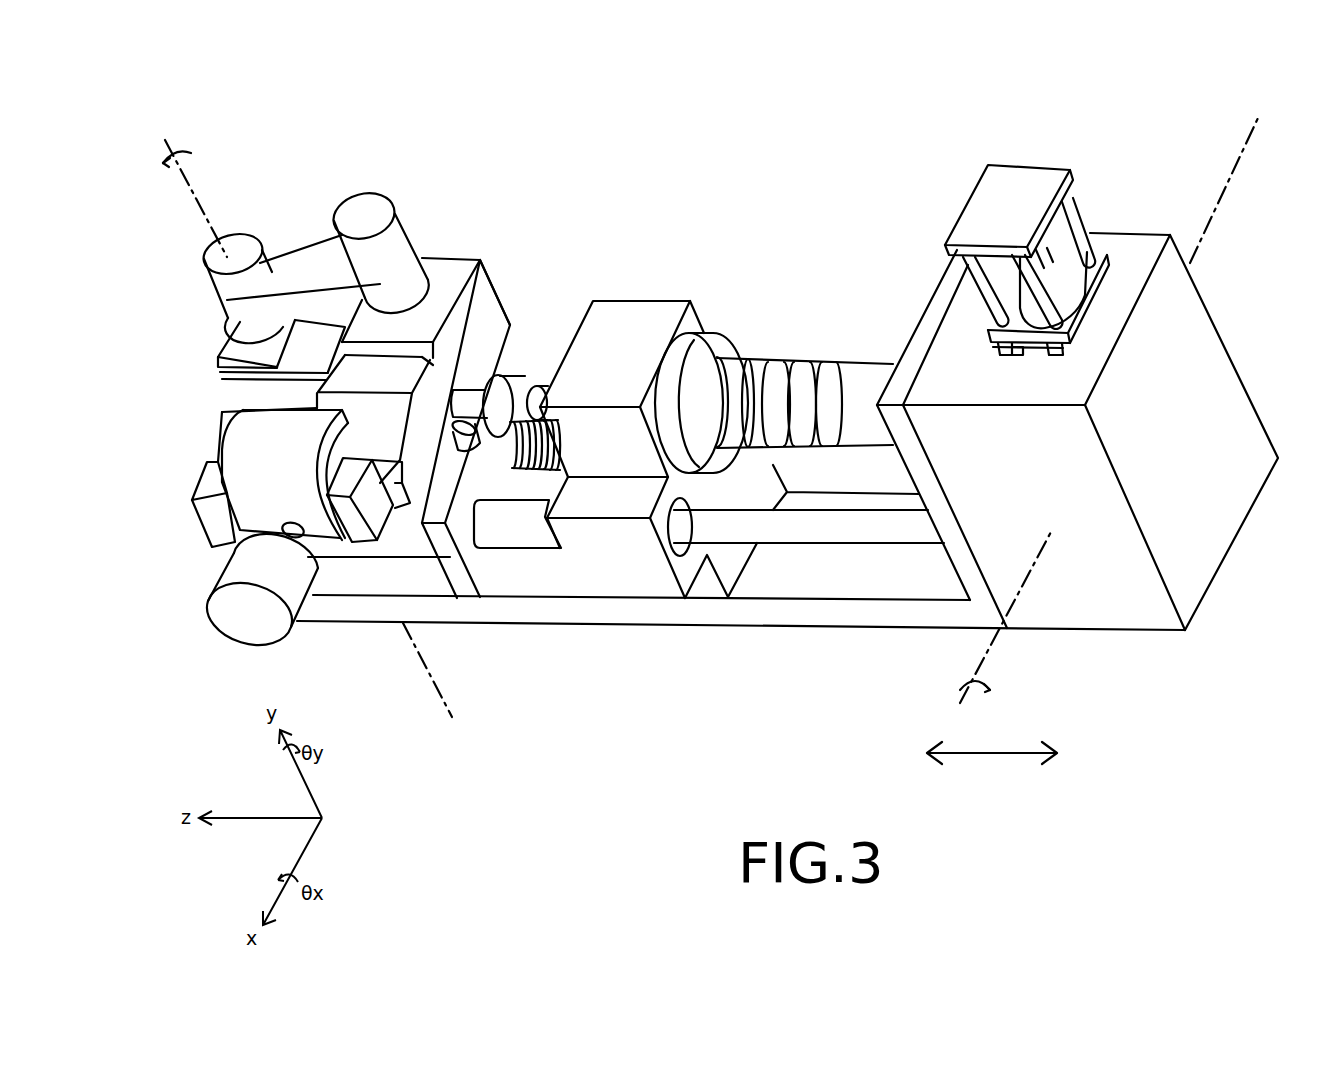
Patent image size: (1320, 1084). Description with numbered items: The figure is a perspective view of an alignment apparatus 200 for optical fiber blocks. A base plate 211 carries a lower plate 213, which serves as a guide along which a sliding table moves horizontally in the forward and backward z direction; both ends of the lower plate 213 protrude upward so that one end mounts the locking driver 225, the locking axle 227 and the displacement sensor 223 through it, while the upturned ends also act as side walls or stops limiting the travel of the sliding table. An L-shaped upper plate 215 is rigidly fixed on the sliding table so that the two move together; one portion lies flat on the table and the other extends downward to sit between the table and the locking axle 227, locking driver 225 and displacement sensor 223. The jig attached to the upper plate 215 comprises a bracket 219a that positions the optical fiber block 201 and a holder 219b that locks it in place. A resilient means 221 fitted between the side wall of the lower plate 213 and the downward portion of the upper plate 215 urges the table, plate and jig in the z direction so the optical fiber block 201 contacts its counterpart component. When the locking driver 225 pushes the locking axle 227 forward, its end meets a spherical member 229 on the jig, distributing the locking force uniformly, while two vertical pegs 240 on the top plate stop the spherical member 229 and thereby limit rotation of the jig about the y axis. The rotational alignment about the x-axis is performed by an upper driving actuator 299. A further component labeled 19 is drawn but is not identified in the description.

The alignment apparatus 200 is at (705, 112).
The optical element holder assembly 19 is at (190, 436).
The optical fiber block 201 is at (240, 352).
The base plate 211 is at (798, 612).
The lower plate 213 is at (639, 580).
The upper plate 215 is at (450, 560).
The bracket 219a is at (333, 313).
The holder 219b is at (312, 260).
The resilient means 221 is at (523, 385).
The displacement sensor 223 is at (527, 533).
The locking driver 225 is at (791, 386).
The locking axle 227 is at (538, 405).
The spherical member 229 is at (497, 377).
The vertical pegs 240 is at (468, 452).
The upper driving actuator 299 is at (1008, 193).